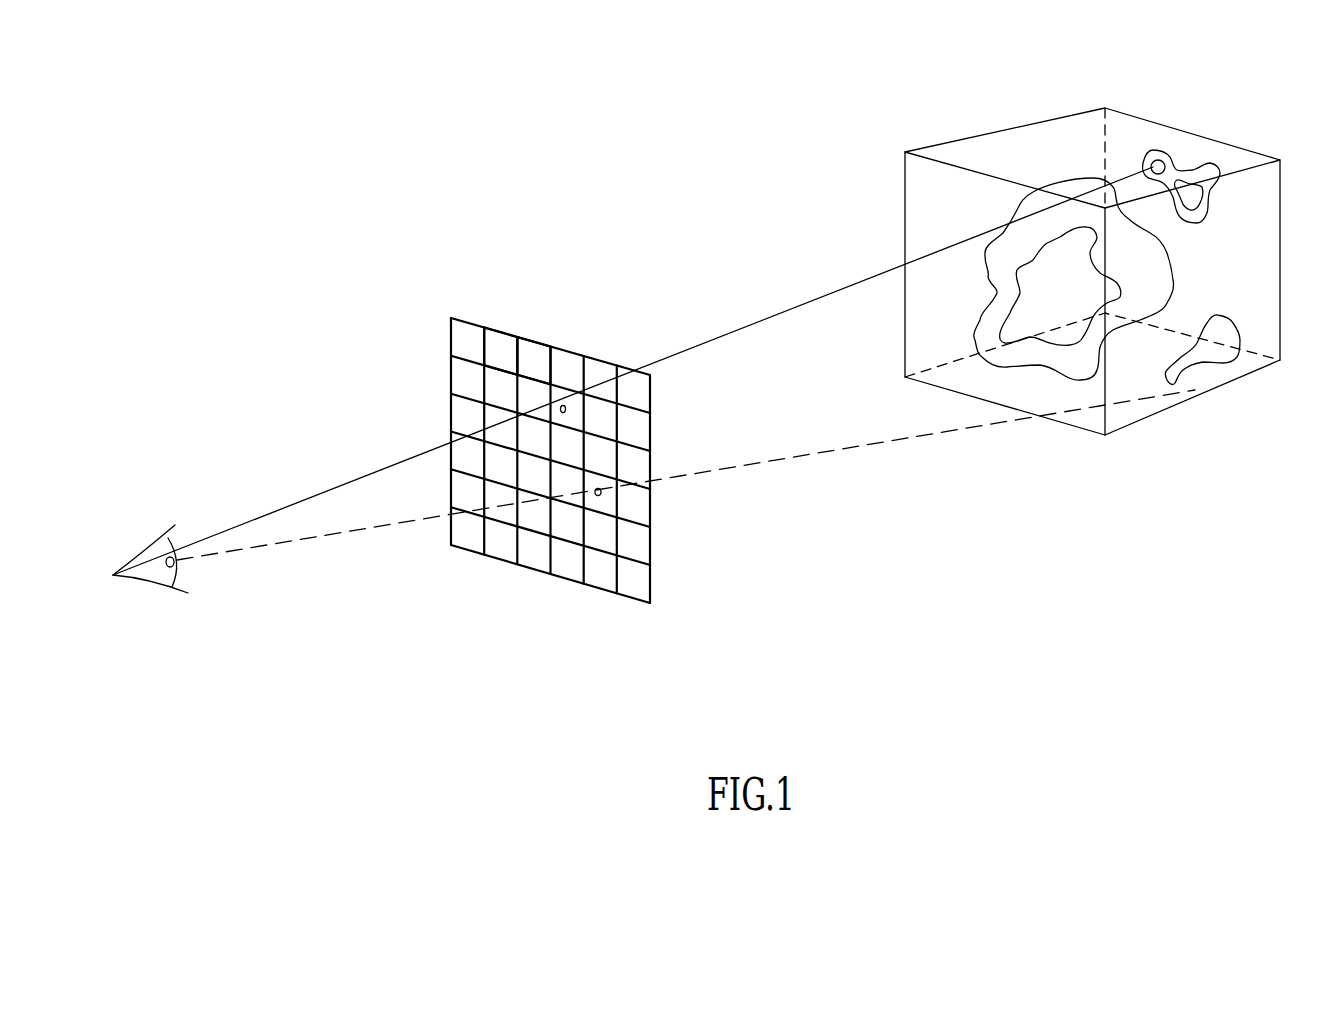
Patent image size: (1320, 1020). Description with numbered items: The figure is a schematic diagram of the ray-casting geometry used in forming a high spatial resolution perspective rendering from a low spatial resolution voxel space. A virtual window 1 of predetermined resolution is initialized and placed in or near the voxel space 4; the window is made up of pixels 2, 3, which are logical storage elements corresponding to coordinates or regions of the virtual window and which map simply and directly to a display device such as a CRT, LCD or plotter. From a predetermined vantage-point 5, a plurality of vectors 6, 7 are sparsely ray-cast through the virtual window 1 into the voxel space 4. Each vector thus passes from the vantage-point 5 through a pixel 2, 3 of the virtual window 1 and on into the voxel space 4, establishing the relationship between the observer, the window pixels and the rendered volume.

The virtual window 1 is at (632, 368).
The pixel 2 is at (502, 352).
The pixel 3 is at (538, 365).
The voxel space 4 is at (1022, 127).
The vantage-point 5 is at (152, 567).
The vector 6 is at (362, 487).
The vector 7 is at (373, 528).